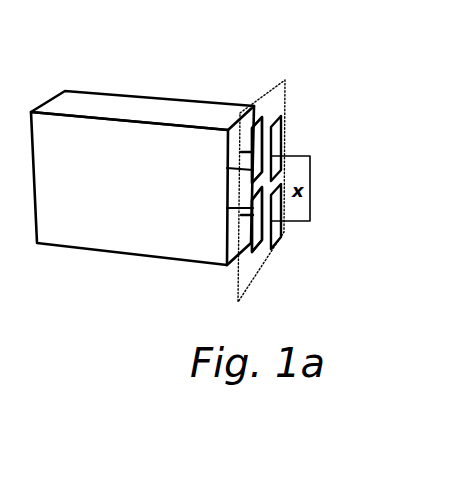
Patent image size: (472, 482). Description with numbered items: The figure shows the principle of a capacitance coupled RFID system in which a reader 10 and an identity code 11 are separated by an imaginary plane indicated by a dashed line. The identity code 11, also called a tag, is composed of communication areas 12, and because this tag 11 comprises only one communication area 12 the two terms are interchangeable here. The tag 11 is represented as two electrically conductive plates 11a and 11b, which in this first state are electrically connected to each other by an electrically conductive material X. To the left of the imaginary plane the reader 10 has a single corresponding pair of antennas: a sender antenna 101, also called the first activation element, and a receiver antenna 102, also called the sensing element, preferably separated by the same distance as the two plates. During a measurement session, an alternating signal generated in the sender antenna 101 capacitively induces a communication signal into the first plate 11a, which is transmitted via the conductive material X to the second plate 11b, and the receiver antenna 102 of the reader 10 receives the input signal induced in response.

The reader 10 is at (168, 80).
The identity code 11 is at (308, 92).
The communication area 12 is at (309, 88).
The first plate 11a is at (282, 143).
The second plate 11b is at (281, 233).
The sender antenna 101 is at (227, 168).
The receiver antenna 102 is at (227, 208).